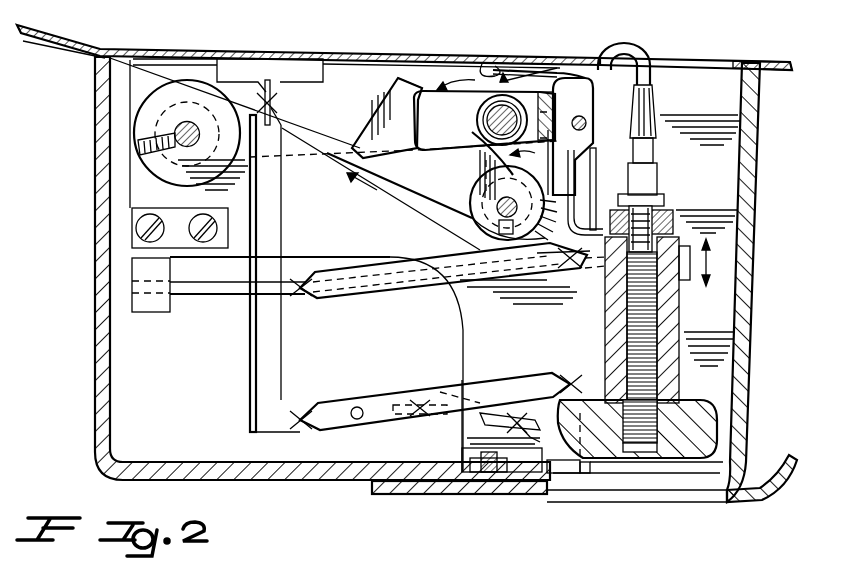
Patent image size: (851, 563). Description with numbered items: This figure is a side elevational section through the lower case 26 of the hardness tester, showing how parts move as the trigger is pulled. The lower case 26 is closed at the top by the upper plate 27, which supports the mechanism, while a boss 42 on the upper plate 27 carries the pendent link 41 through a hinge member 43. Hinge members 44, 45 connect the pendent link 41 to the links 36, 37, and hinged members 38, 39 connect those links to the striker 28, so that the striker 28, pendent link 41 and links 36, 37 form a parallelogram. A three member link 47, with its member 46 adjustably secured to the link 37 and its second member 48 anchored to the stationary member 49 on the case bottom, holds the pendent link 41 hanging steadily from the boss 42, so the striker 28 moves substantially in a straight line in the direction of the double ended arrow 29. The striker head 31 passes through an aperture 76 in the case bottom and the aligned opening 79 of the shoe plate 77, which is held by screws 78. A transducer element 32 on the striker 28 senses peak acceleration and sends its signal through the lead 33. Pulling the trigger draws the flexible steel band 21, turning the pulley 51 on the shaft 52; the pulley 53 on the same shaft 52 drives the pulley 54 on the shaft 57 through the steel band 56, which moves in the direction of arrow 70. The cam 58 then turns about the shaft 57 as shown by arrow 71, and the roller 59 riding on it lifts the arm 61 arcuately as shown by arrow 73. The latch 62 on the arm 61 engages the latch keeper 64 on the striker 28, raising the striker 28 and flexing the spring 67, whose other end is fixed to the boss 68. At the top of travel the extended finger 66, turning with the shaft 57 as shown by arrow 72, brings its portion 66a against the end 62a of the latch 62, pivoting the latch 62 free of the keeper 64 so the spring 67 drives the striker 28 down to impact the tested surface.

The flexible steel band 21 is at (76, 53).
The lower case 26 is at (95, 388).
The upper plate 27 is at (357, 38).
The striker 28 is at (683, 324).
The double ended arrow 29 is at (709, 258).
The striker head 31 is at (705, 432).
The transducer element 32 is at (660, 185).
The lead 33 is at (650, 52).
The link 36 is at (358, 300).
The link 37 is at (430, 400).
The hinged member 38 is at (568, 270).
The hinged member 39 is at (570, 380).
The pendent link 41 is at (249, 362).
The boss 42 is at (323, 82).
The hinge member 43 is at (276, 108).
The hinge member 44 is at (302, 292).
The hinge member 45 is at (302, 418).
The member 46 is at (345, 406).
The three member link 47 is at (428, 422).
The second member 48 is at (468, 422).
The stationary member 49 is at (565, 478).
The pulley 51 is at (187, 133).
The shaft 52 is at (203, 123).
The pulley 53 is at (170, 180).
The pulley 54 is at (581, 191).
The flexible steel band 56 is at (407, 203).
The shaft 57 is at (511, 197).
The cam 58 is at (482, 140).
The roller 59 is at (478, 116).
The arm 61 is at (340, 103).
The latch 62 is at (533, 66).
The end of the latch 62a is at (484, 64).
The latch keeper 64 is at (590, 166).
The extended finger 66 is at (362, 140).
The portion of the finger 66a is at (412, 87).
The spring 67 is at (228, 295).
The boss 68 is at (172, 312).
The arrow 70 is at (366, 186).
The arrow 71 is at (537, 155).
The arrow 72 is at (497, 81).
The arrow 73 is at (544, 94).
The aperture 76 is at (552, 476).
The shoe plate 77 is at (442, 496).
The screws 78 is at (488, 486).
The opening 79 is at (728, 497).